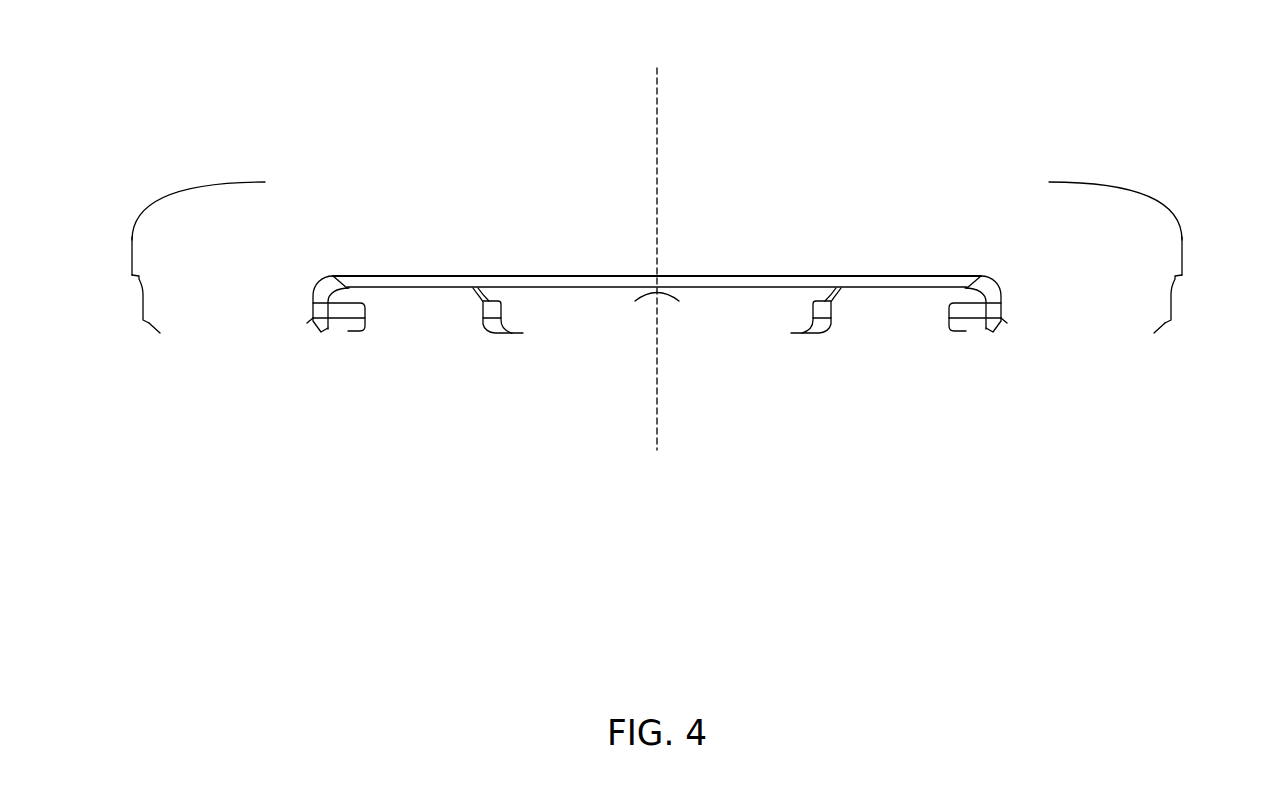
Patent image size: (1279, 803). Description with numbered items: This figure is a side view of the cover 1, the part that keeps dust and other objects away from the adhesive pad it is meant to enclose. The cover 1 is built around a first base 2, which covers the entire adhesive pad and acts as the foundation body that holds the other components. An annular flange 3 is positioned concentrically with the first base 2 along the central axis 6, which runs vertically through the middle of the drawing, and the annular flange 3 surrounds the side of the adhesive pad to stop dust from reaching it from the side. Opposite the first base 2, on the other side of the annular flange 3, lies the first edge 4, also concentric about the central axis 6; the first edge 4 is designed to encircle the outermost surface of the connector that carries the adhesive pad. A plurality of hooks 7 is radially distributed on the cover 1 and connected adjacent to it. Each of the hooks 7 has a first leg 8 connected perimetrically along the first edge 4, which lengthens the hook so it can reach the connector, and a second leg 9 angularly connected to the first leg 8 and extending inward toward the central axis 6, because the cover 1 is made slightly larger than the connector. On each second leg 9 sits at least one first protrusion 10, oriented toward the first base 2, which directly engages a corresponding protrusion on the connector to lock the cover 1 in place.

The cover 1 is at (803, 92).
The first base 2 is at (394, 183).
The annular flange 3 is at (1177, 262).
The first edge 4 is at (413, 298).
The central axis 6 is at (657, 101).
The plurality of hooks 7 is at (210, 348).
The first leg 8 is at (148, 301).
The second leg 9 is at (348, 332).
The first protrusion 10 is at (663, 292).